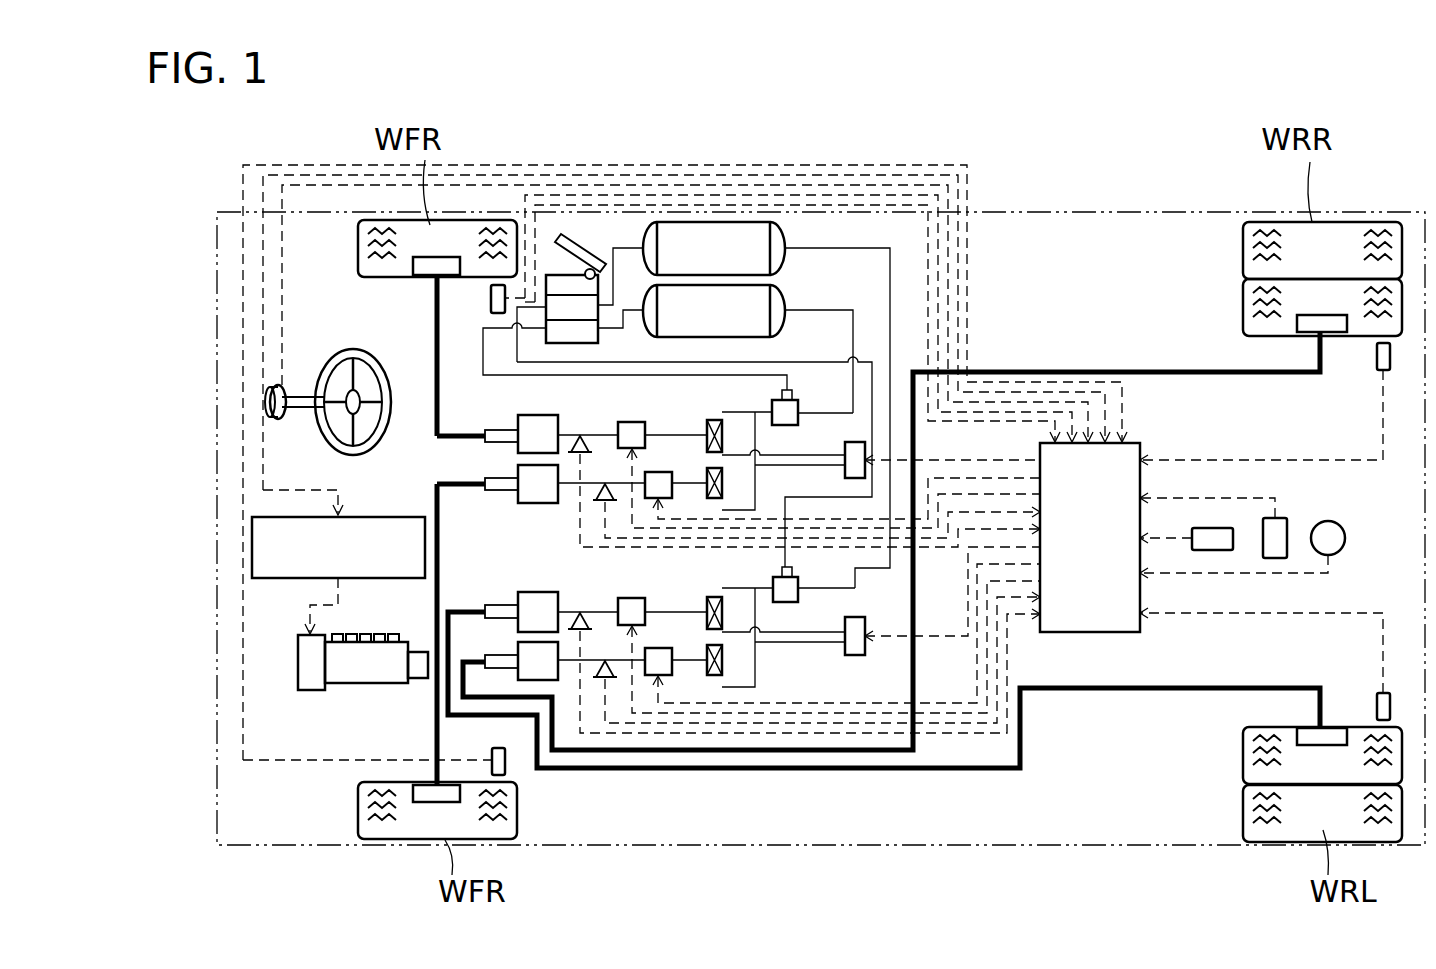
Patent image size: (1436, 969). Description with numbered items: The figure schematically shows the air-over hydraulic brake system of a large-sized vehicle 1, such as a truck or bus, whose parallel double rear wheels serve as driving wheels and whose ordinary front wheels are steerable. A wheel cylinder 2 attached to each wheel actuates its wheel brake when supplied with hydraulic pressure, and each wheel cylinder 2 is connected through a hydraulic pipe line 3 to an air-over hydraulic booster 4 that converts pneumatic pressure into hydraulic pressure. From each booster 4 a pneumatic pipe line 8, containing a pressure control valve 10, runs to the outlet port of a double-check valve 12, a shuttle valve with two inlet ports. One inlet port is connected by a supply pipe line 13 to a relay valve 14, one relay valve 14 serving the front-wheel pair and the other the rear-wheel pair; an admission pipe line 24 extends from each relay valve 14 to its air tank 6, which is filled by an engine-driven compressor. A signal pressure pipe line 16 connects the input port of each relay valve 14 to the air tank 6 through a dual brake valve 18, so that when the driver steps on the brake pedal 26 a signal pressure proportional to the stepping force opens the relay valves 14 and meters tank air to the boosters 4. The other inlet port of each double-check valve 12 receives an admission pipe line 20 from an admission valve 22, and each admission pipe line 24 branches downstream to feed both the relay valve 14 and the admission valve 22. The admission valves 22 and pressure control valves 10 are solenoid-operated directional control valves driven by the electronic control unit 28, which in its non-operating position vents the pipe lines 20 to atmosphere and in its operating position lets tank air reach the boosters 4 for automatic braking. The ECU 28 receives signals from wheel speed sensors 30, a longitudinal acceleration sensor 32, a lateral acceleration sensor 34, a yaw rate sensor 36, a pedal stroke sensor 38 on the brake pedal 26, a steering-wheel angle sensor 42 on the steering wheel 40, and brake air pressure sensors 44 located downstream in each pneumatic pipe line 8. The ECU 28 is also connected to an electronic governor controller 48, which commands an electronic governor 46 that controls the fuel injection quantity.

The vehicle 1 is at (195, 187).
The wheel cylinder 2 is at (426, 278).
The hydraulic pipe line 3 is at (437, 340).
The air-over hydraulic booster 4 is at (487, 482).
The air tank 6 is at (740, 300).
The pneumatic pipe line 8 is at (570, 430).
The pressure control valve 10 is at (632, 422).
The double-check valve 12 is at (712, 420).
The supply pipe line 13 is at (733, 414).
The relay valve 14 is at (796, 409).
The signal pressure pipe line 16 is at (766, 374).
The dual brake valve 18 is at (556, 333).
The admission pipe line 20 is at (793, 640).
The admission valve 22 is at (845, 468).
The admission pipe line 24 is at (810, 308).
The brake pedal 26 is at (583, 244).
The electronic control unit 28 is at (1110, 632).
The wheel speed sensor 30 is at (491, 306).
The longitudinal acceleration sensor 32 is at (1203, 528).
The lateral acceleration sensor 34 is at (1275, 518).
The yaw rate sensor 36 is at (1320, 528).
The pedal stroke sensor 38 is at (558, 280).
The steering wheel 40 is at (358, 352).
The steering-wheel angle sensor 42 is at (285, 385).
The brake air pressure sensor 44 is at (582, 432).
The electronic governor 46 is at (320, 692).
The electronic governor controller 48 is at (380, 517).